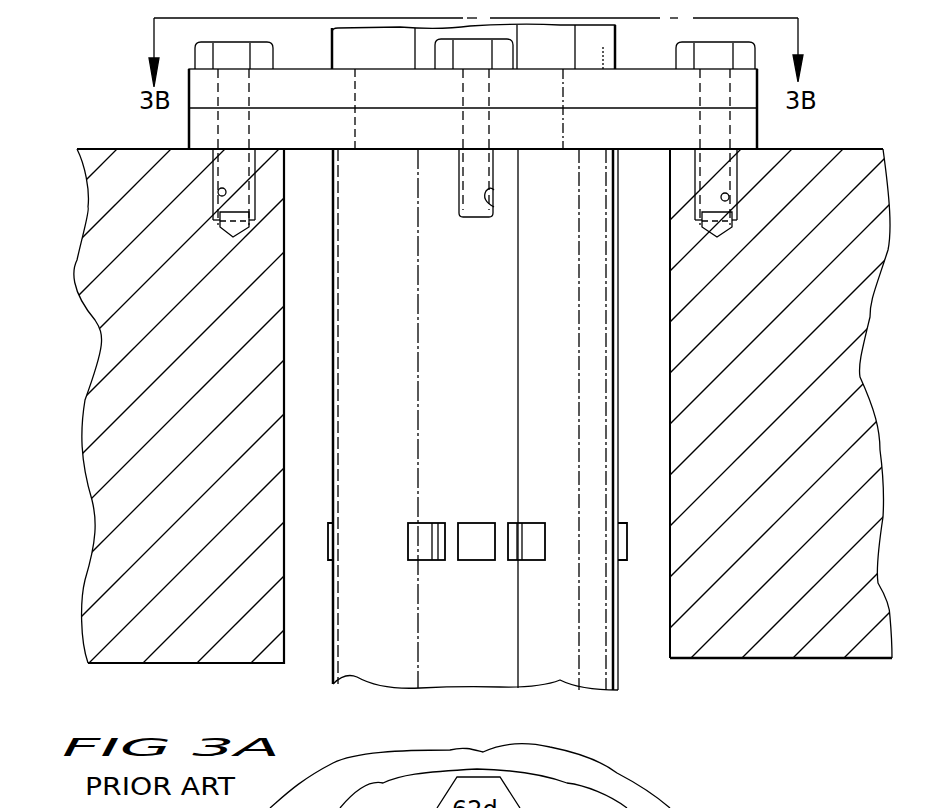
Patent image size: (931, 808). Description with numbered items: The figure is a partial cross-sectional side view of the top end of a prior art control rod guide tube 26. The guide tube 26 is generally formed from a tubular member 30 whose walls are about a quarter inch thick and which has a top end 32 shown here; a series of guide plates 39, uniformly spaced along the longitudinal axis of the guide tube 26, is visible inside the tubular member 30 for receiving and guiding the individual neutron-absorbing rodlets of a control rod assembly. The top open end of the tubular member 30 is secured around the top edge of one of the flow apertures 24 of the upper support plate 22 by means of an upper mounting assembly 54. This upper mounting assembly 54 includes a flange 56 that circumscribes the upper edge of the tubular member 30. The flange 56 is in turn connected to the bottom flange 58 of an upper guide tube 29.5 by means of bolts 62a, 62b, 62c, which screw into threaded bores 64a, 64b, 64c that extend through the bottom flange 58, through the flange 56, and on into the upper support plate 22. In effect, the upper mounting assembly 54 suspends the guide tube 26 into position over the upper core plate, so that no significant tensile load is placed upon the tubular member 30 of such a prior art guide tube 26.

The upper support plate 22 is at (670, 485).
The flow aperture 24 is at (668, 622).
The control rod guide tube 26 is at (112, 96).
The upper guide tube 29.5 is at (590, 36).
The tubular member 30 is at (617, 377).
The top end 32 is at (330, 152).
The guide plates 39 is at (533, 547).
The upper mounting assembly 54 is at (170, 136).
The flange 56 is at (747, 133).
The bottom flange 58 is at (322, 93).
The bolt 62a is at (197, 52).
The bolt 62b is at (505, 55).
The bolt 62c is at (750, 52).
The threaded bore 64a is at (218, 193).
The threaded bore 64b is at (495, 207).
The threaded bore 64c is at (728, 200).